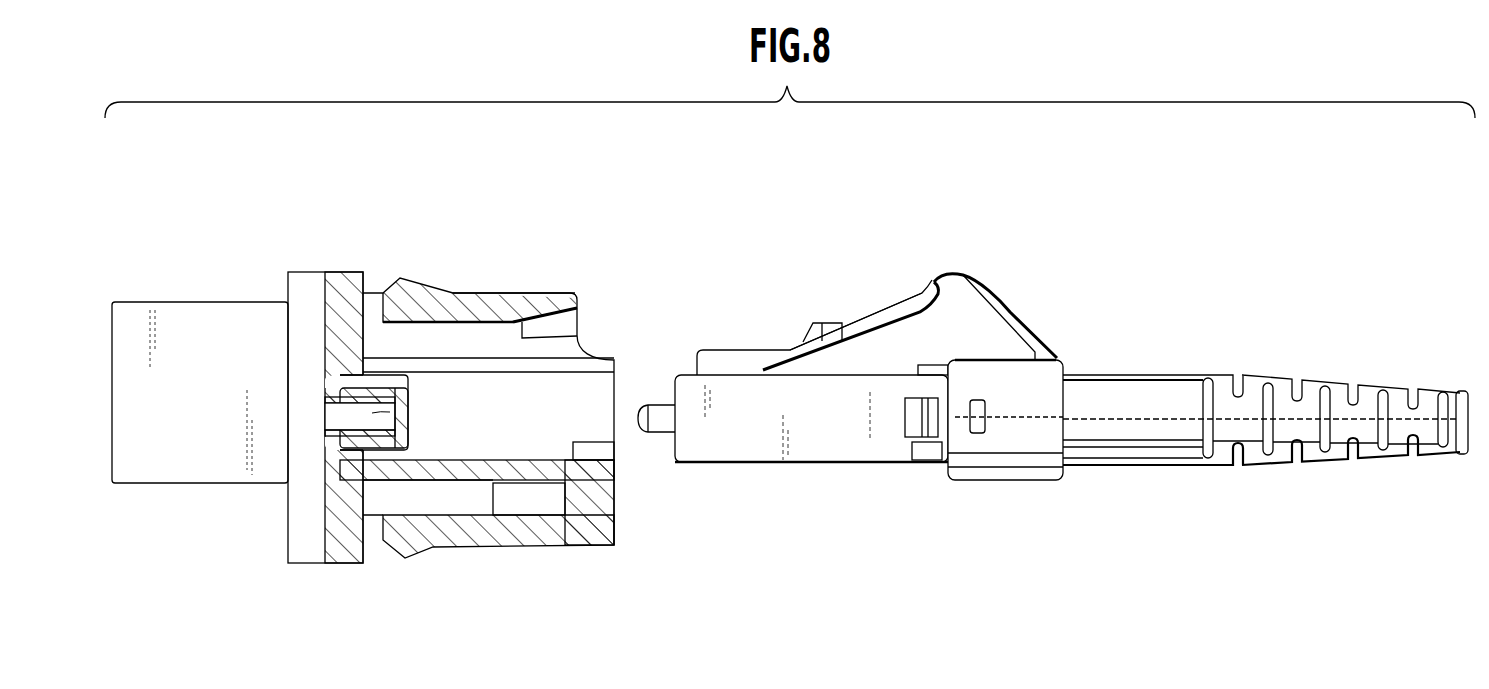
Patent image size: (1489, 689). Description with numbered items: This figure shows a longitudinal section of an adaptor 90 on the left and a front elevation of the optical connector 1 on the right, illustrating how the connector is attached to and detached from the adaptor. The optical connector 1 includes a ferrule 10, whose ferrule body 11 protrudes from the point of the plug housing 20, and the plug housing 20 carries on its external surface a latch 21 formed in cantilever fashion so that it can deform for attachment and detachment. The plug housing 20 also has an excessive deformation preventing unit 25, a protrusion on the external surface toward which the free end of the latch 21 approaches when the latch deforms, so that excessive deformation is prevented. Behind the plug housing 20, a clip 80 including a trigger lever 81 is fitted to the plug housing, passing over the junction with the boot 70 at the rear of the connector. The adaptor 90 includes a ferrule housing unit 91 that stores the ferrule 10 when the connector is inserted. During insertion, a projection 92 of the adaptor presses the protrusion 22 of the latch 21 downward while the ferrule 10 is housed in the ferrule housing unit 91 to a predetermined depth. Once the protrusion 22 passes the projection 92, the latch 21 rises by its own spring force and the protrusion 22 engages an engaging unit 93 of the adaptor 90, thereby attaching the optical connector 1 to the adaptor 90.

The optical connector 1 is at (1088, 268).
The ferrule 10 is at (655, 405).
The ferrule body 11 is at (656, 418).
The plug housing 20 is at (820, 463).
The latch 21 is at (889, 312).
The protrusion 22 is at (828, 322).
The excessive deformation preventing unit 25 is at (935, 368).
The boot 70 is at (1252, 455).
The clip 80 is at (1008, 482).
The trigger lever 81 is at (982, 292).
The adaptor 90 is at (370, 243).
The ferrule housing unit 91 is at (410, 418).
The projection 92 is at (546, 328).
The engaging unit 93 is at (517, 332).